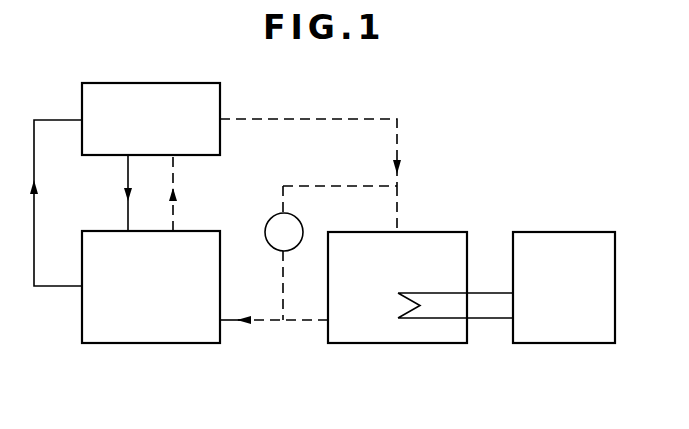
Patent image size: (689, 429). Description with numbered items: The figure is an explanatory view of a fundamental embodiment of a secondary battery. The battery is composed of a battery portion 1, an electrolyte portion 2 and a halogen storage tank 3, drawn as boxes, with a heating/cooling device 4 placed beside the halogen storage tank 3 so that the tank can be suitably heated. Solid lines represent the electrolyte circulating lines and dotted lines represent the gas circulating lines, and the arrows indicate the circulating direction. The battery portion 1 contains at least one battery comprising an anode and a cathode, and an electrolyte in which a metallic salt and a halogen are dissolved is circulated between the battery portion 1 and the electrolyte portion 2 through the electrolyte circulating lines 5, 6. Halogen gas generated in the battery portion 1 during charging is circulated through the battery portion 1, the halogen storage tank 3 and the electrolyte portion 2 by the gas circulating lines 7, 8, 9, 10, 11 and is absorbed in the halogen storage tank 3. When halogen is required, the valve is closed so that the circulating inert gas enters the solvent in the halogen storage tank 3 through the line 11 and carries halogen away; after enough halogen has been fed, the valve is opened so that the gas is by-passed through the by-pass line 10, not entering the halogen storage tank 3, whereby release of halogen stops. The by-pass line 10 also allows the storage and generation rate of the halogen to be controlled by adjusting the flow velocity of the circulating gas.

The battery portion 1 is at (199, 83).
The electrolyte portion 2 is at (203, 231).
The halogen storage tank 3 is at (458, 232).
The heating/cooling device 4 is at (595, 232).
The electrolyte circulating line 5 is at (35, 223).
The electrolyte circulating line 6 is at (128, 177).
The gas circulating line 7 is at (175, 176).
The gas circulating line 8 is at (353, 118).
The gas circulating line 9 is at (265, 322).
The by-pass line 10 is at (327, 184).
The gas circulating line 11 is at (400, 208).